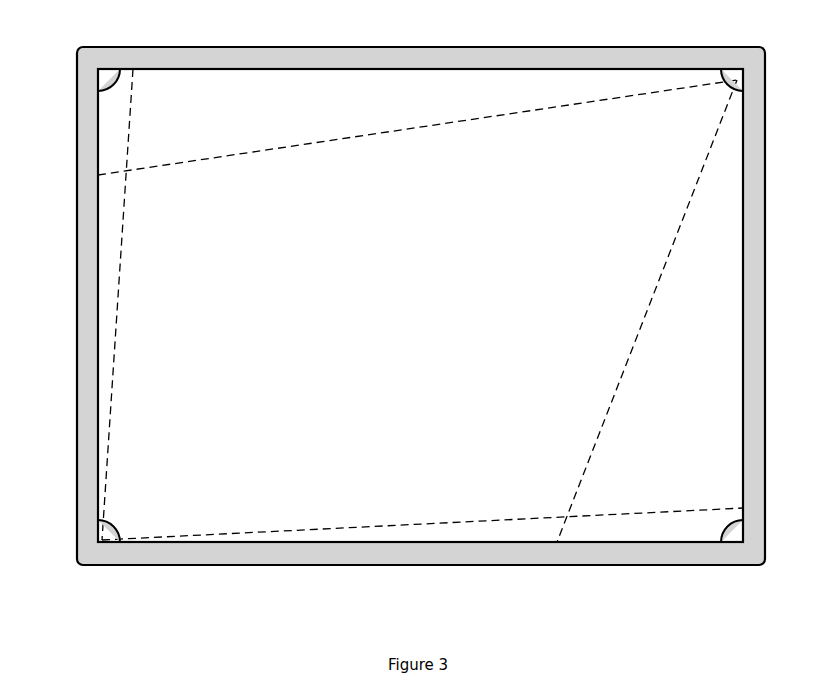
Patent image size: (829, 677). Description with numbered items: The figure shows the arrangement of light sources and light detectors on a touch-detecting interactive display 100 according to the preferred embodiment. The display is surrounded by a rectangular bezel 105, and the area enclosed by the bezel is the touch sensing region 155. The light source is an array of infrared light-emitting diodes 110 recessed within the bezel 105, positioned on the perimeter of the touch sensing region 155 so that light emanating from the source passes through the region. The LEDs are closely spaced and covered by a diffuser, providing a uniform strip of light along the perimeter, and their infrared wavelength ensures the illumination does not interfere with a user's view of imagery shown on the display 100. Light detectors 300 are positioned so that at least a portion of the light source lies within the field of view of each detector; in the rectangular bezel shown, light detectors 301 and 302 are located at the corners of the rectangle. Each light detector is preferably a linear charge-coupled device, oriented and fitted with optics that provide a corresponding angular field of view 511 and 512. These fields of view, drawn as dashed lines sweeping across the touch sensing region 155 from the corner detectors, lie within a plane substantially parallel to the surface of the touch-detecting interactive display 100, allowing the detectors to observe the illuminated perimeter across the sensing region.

The touch-detecting interactive display 100 is at (75, 263).
The bezel 105 is at (755, 204).
The array of infrared light-emitting diodes 110 is at (740, 392).
The touch sensing region 155 is at (253, 84).
The light detector 300 is at (97, 79).
The light detector 301 is at (112, 546).
The light detector 302 is at (727, 72).
The angular field of view 511 is at (403, 132).
The angular field of view 512 is at (665, 507).